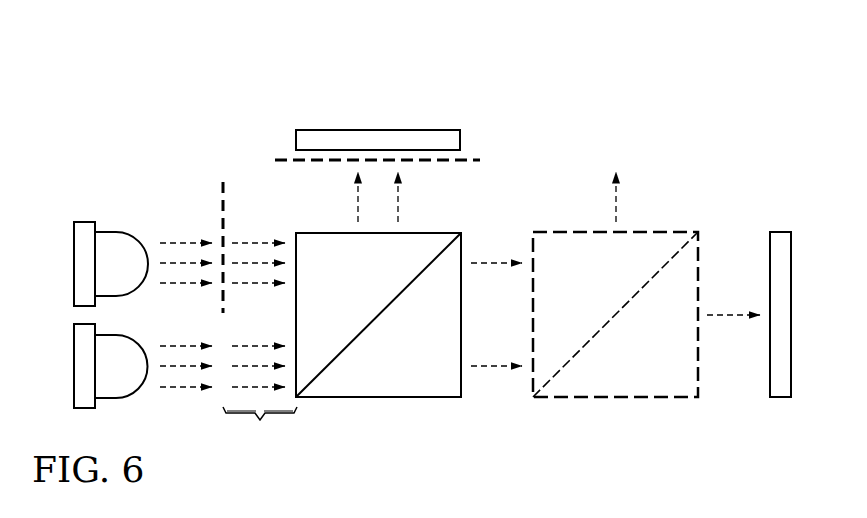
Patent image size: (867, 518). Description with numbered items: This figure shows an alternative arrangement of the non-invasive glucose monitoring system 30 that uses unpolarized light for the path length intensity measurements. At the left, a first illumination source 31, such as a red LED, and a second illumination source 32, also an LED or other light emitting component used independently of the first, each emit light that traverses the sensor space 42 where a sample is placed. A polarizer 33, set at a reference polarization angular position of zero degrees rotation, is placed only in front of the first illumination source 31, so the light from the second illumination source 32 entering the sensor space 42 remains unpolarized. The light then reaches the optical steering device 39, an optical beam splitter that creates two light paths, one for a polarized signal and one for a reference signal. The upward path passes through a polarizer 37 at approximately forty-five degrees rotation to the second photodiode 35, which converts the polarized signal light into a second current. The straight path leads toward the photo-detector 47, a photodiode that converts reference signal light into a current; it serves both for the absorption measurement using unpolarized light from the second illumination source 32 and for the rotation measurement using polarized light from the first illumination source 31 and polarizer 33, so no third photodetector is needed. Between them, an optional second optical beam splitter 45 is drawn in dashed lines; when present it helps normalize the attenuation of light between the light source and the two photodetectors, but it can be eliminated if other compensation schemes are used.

The non-invasive glucose monitoring system 30 is at (246, 64).
The first illumination source 31 is at (74, 252).
The second illumination source 32 is at (74, 378).
The polarizer 33 is at (222, 192).
The second photodiode 35 is at (378, 130).
The polarizer 37 is at (303, 163).
The optical steering device 39 is at (378, 398).
The sensor space 42 is at (260, 348).
The optical beam splitter 45 is at (637, 398).
The photo-detector 47 is at (792, 303).